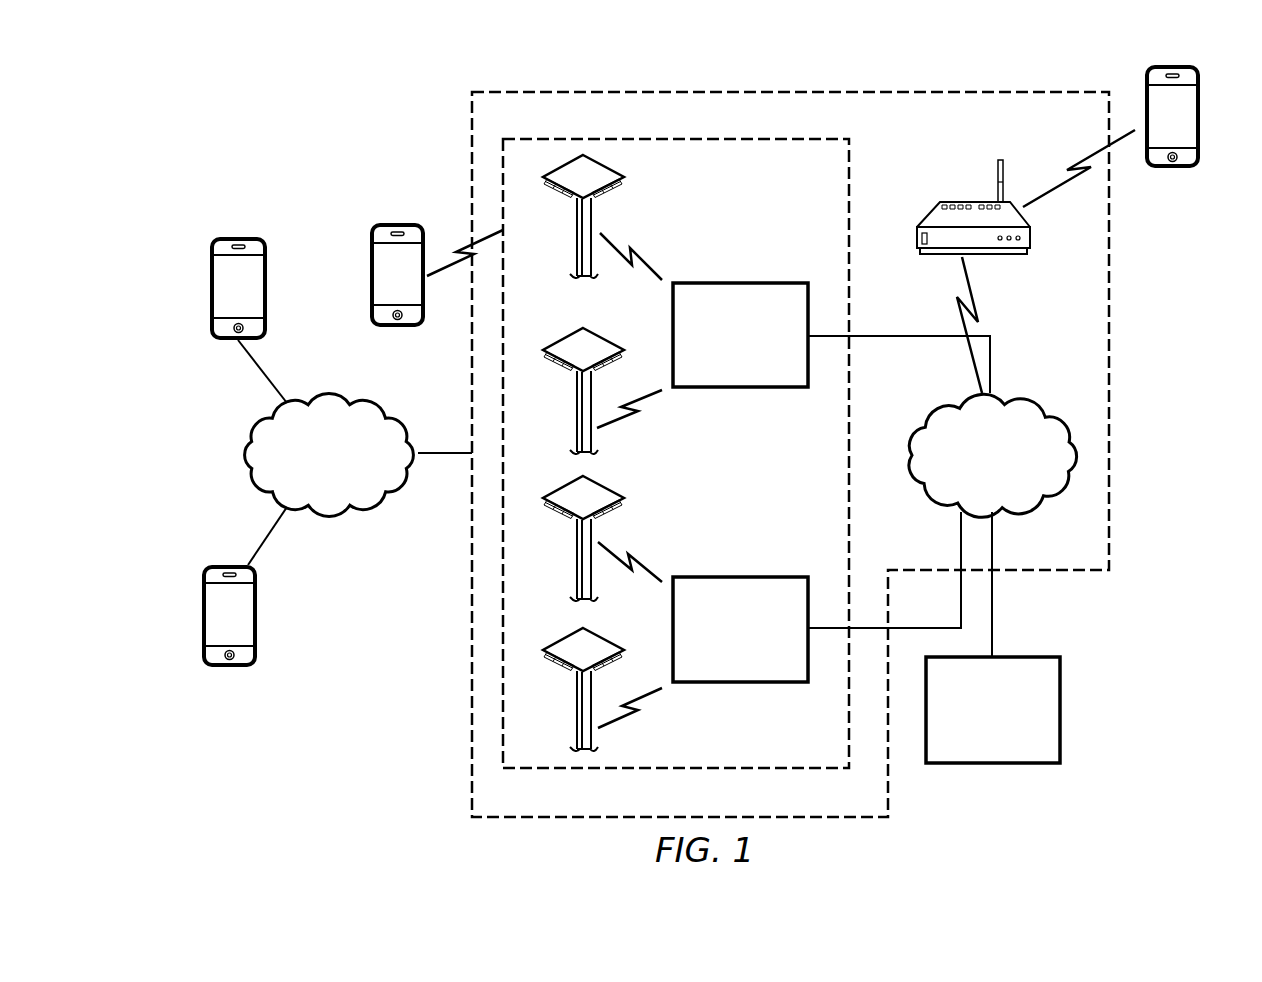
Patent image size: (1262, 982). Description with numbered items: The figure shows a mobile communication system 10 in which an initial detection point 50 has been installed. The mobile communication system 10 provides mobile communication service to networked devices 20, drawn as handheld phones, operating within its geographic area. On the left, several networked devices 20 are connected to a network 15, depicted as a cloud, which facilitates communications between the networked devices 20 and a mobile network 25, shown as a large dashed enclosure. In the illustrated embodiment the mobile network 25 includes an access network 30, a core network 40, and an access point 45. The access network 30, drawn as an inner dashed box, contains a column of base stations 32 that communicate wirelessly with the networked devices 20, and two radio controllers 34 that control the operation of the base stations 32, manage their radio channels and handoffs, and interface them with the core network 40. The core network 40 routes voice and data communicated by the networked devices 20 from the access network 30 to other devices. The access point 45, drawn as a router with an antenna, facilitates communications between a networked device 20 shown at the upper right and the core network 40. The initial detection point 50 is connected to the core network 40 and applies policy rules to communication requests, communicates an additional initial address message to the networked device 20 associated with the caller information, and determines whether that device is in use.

The mobile communication system 10 is at (386, 63).
The network 15 is at (378, 401).
The networked device 20 is at (210, 268).
The mobile network 25 is at (978, 92).
The access network 30 is at (790, 139).
The base station 32 is at (577, 220).
The radio controller 34 is at (760, 283).
The core network 40 is at (982, 488).
The access point 45 is at (1030, 236).
The initial detection point 50 is at (1060, 680).